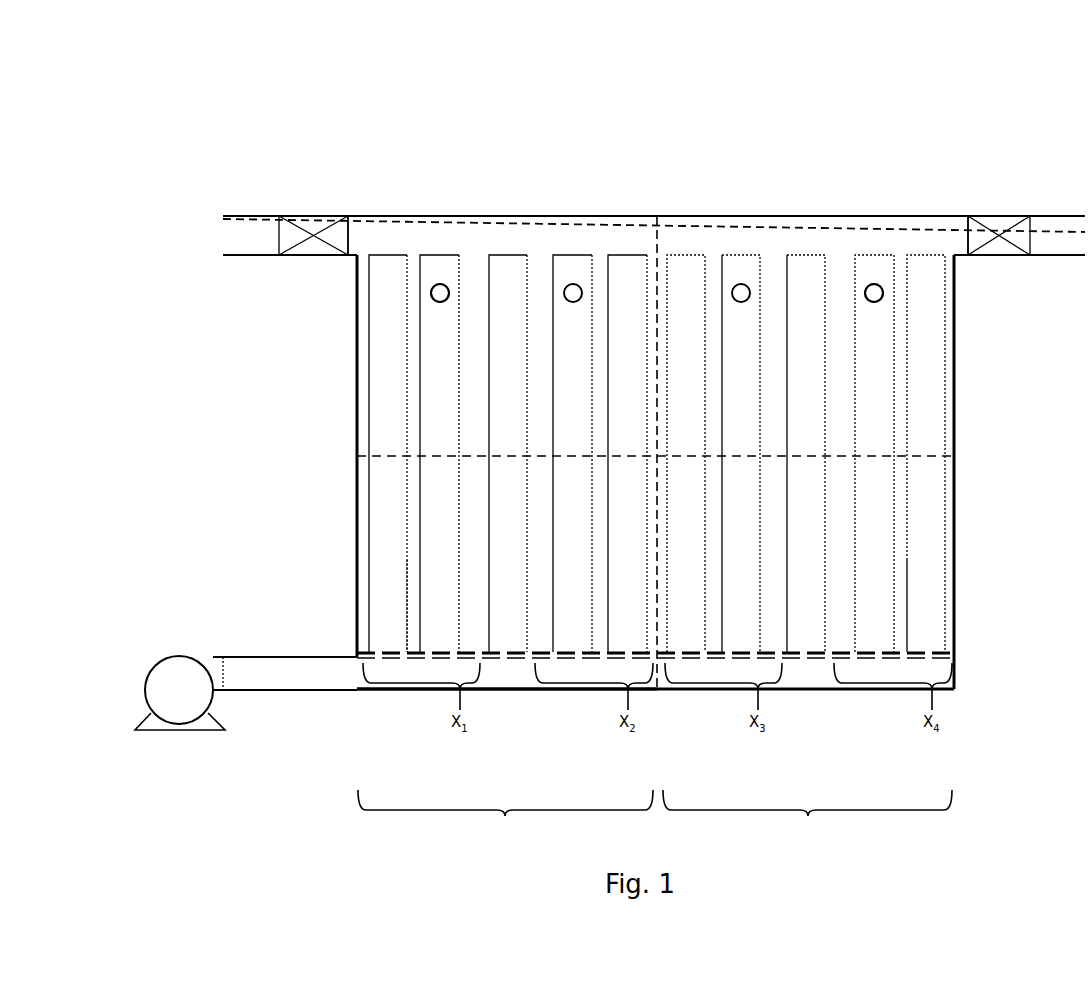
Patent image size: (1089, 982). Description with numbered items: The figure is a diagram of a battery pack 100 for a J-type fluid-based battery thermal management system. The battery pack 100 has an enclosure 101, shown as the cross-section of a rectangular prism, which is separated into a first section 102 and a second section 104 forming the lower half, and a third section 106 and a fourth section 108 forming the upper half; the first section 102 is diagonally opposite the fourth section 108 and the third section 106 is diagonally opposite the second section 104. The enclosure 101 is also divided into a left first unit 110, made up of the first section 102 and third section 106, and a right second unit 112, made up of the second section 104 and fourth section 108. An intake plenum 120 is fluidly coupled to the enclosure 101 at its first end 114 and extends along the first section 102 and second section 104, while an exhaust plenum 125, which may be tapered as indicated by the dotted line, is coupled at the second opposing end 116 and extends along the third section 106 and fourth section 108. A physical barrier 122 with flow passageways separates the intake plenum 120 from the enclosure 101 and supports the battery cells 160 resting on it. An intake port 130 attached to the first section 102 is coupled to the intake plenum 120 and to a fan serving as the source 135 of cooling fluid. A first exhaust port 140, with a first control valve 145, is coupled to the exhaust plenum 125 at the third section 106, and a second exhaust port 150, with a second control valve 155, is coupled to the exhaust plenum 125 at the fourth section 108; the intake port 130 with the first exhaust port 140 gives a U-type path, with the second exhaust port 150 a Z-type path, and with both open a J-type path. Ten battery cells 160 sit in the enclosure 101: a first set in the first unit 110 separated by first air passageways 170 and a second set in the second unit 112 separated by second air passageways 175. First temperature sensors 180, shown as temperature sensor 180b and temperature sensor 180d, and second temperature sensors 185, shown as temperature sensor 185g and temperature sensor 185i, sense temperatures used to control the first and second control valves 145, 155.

The battery pack 100 is at (126, 86).
The enclosure 101 is at (290, 430).
The first section 102 is at (345, 538).
The second section 104 is at (966, 538).
The third section 106 is at (345, 341).
The fourth section 108 is at (966, 341).
The first unit 110 is at (505, 816).
The second unit 112 is at (808, 816).
The first end 114 is at (822, 660).
The second opposing end 116 is at (827, 250).
The intake plenum 120 is at (390, 690).
The physical barrier 122 is at (715, 660).
The exhaust plenum 125 is at (387, 222).
The intake port 130 is at (280, 690).
The source of cooling fluid 135 is at (158, 688).
The first exhaust port 140 is at (260, 218).
The first control valve 145 is at (342, 218).
The second exhaust port 150 is at (1050, 235).
The second control valve 155 is at (977, 235).
The battery cells 160 is at (933, 421).
The first air passageways 170 is at (410, 592).
The second air passageways 175 is at (898, 612).
The first temperature sensors 180 is at (418, 293).
The temperature sensor 180b is at (440, 284).
The temperature sensor 180d is at (573, 284).
The second temperature sensors 185 is at (896, 293).
The temperature sensor 185g is at (741, 284).
The temperature sensor 185i is at (874, 284).